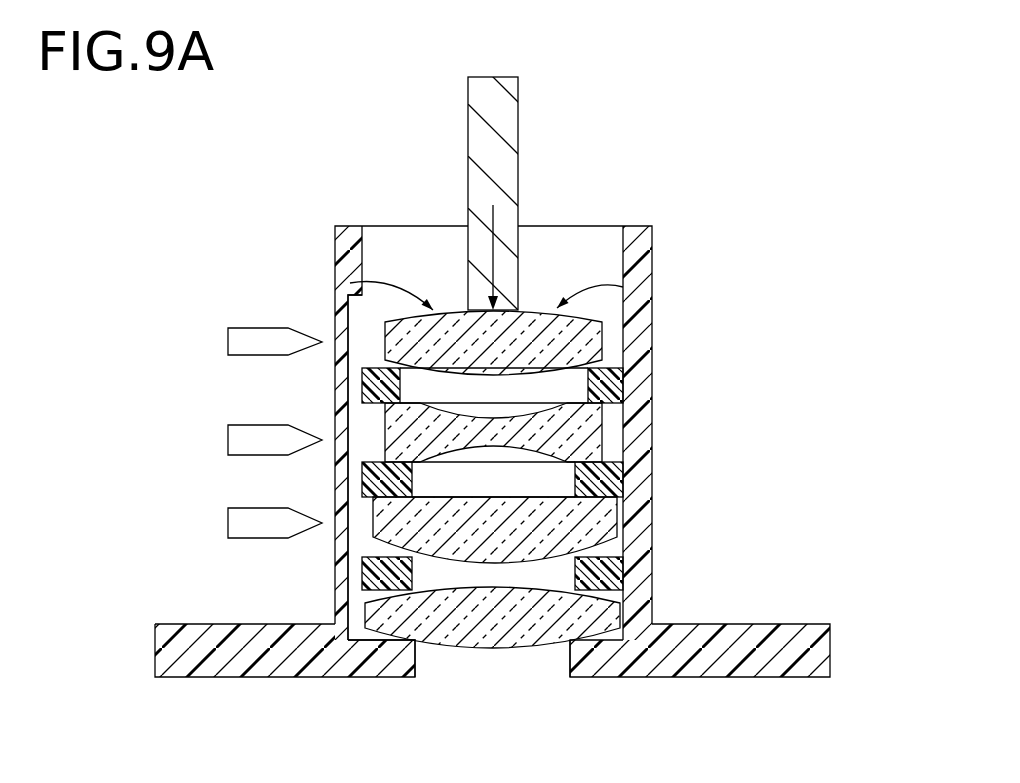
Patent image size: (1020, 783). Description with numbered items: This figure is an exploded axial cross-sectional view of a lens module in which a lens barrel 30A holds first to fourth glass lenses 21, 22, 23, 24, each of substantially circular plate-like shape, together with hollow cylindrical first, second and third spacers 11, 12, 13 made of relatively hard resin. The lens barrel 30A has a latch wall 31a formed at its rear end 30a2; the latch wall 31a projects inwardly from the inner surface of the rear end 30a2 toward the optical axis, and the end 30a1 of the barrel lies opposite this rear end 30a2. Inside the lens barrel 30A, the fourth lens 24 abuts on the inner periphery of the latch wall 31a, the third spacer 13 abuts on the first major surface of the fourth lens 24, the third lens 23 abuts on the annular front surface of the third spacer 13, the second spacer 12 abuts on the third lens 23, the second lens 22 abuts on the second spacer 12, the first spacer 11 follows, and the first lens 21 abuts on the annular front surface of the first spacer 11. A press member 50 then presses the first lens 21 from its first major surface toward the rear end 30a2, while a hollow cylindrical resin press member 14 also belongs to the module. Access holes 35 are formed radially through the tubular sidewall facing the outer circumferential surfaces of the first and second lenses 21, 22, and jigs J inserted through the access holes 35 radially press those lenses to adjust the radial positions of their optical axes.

The press member 50 is at (520, 128).
The lens barrel 30A is at (492, 478).
The tubular wall of lens barrel 30a1 is at (653, 244).
The rear end of lens barrel 30a2 is at (615, 680).
The latch wall 31a is at (597, 668).
The access holes 35 is at (337, 337).
The first lens 21 is at (605, 335).
The second lens 22 is at (604, 440).
The third lens 23 is at (619, 518).
The fourth lens 24 is at (622, 612).
The first spacer 11 is at (362, 385).
The second spacer 12 is at (362, 472).
The third spacer 13 is at (362, 566).
The press member 14 is at (363, 677).
The jigs J is at (228, 347).